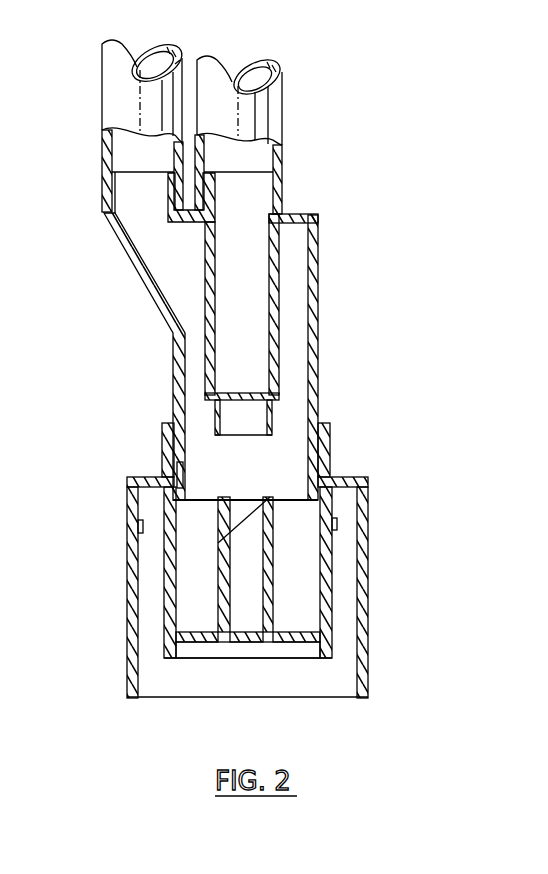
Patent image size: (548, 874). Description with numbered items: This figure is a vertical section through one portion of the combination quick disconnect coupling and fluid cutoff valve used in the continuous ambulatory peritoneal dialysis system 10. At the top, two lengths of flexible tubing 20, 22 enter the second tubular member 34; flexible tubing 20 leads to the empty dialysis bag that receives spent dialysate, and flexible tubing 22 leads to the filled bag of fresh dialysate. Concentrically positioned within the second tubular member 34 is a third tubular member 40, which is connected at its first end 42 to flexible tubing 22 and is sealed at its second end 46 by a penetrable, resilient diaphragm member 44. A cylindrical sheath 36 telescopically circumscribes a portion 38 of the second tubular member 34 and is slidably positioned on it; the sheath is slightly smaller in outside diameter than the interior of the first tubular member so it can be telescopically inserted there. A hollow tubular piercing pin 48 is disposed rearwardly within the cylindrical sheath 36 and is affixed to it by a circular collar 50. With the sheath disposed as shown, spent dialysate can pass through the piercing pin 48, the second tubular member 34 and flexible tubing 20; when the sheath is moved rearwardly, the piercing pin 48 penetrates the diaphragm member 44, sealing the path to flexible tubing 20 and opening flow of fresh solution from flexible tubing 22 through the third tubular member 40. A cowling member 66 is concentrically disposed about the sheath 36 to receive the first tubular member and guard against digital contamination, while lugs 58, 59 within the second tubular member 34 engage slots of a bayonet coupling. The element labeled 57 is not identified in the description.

The continuous ambulatory peritoneal dialysis system 10 is at (393, 600).
The flexible tubing 20 is at (102, 108).
The flexible tubing 22 is at (283, 100).
The second tubular member 34 is at (318, 283).
The cylindrical sheath 36 is at (165, 617).
The portion of second tubular member 38 is at (320, 437).
The third tubular member 40 is at (277, 275).
The first end 42 is at (276, 214).
The penetrable, resilient diaphragm member 44 is at (247, 402).
The second end 46 is at (215, 420).
The hollow tubular piercing pin 48 is at (272, 548).
The circular collar 50 is at (300, 643).
The left collar 57 is at (163, 450).
The lug 58 is at (340, 523).
The lug 59 is at (141, 527).
The cowling member 66 is at (368, 625).